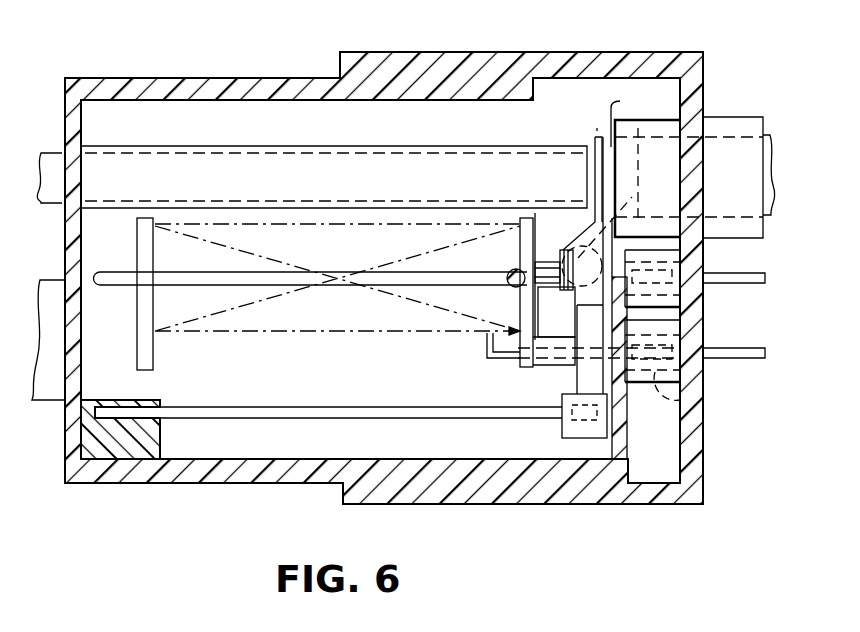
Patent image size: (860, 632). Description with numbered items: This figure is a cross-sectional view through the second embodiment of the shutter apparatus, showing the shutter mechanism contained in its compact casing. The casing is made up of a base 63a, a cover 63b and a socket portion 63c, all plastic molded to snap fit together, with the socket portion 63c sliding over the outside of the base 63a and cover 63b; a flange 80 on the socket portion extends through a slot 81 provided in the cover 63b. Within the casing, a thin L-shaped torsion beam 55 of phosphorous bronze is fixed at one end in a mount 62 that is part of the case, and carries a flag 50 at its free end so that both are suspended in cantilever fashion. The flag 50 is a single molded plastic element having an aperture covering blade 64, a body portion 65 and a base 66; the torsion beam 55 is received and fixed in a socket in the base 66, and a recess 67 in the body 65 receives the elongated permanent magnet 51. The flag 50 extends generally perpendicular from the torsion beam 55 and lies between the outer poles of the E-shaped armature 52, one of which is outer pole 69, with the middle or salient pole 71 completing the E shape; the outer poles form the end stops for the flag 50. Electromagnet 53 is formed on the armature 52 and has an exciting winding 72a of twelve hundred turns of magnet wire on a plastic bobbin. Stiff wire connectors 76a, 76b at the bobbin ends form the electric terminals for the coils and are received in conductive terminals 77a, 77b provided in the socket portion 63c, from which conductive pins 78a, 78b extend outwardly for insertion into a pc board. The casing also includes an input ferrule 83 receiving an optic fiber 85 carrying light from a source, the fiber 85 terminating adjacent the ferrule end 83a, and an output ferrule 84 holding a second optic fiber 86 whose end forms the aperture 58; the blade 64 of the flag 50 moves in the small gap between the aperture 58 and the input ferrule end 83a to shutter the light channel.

The flag 50 is at (599, 122).
The permanent magnet 51 is at (560, 252).
The armature 52 is at (118, 246).
The electromagnet 53 is at (337, 254).
The winding 72a is at (312, 230).
The torsion beam 55 is at (340, 407).
The aperture 58 is at (622, 100).
The mount 62 is at (147, 437).
The base 63a is at (237, 470).
The cover 63b is at (285, 76).
The socket portion 63c is at (645, 510).
The aperture covering blade 64 is at (597, 160).
The body portion 65 is at (574, 294).
The base 66 is at (568, 428).
The recess 67 is at (636, 210).
The outer pole 69 is at (553, 258).
The salient pole 71 is at (351, 272).
The wire connector 76a is at (725, 210).
The wire connector 76b is at (553, 378).
The conductive terminal 77a is at (665, 300).
The conductive terminal 77b is at (704, 407).
The conductive pin 78a is at (725, 277).
The conductive pin 78b is at (724, 359).
The flange 80 is at (47, 404).
The slot 81 is at (80, 385).
The input ferrule 83 is at (128, 146).
The input ferrule end 83a is at (593, 140).
The output ferrule 84 is at (728, 130).
The optic fiber 85 is at (88, 148).
The optic fiber 86 is at (770, 130).